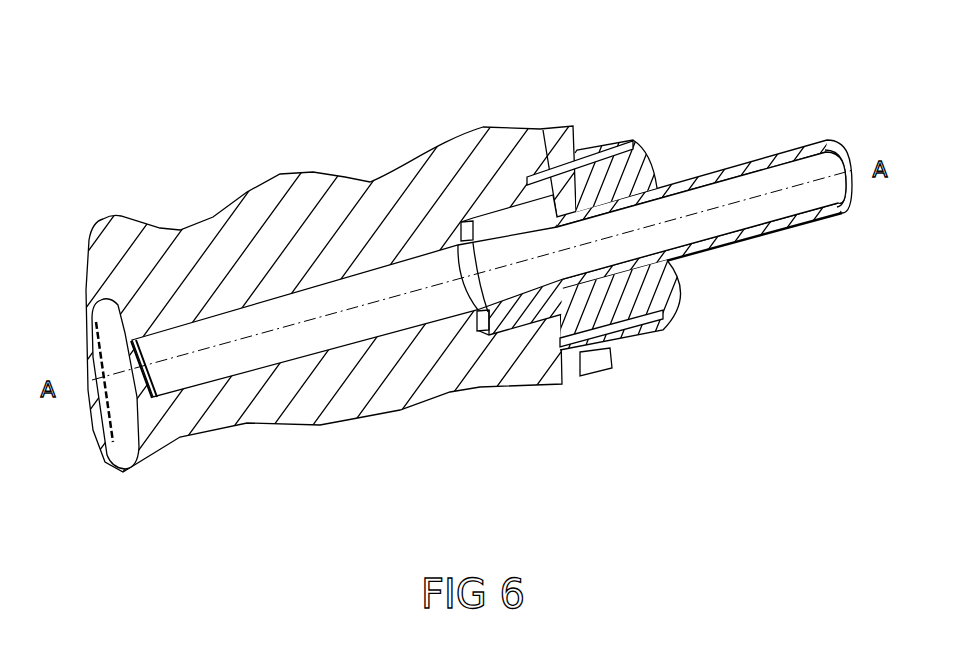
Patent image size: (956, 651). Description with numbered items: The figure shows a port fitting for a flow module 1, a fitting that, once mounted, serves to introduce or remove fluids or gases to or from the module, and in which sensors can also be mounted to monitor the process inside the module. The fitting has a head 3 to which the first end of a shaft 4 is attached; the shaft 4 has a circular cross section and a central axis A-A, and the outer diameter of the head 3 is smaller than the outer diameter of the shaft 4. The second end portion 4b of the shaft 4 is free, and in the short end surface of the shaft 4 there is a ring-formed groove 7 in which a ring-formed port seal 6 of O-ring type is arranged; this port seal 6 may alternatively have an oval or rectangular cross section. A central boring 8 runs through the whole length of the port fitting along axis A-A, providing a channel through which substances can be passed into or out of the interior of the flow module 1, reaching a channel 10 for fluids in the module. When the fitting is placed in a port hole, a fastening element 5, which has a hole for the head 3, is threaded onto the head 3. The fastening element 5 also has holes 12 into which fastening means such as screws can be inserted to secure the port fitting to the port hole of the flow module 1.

The flow module 1 is at (415, 377).
The head 3 is at (597, 207).
The shaft 4 is at (767, 237).
The second end portion 4b is at (487, 322).
The fastening element 5 is at (645, 143).
The port seal 6 is at (455, 237).
The ring-formed groove 7 is at (462, 222).
The central boring 8 is at (683, 223).
The channel 10 is at (120, 418).
The holes 12 is at (660, 337).